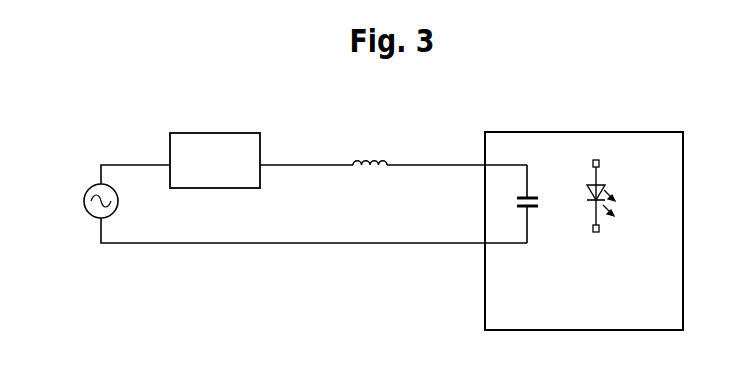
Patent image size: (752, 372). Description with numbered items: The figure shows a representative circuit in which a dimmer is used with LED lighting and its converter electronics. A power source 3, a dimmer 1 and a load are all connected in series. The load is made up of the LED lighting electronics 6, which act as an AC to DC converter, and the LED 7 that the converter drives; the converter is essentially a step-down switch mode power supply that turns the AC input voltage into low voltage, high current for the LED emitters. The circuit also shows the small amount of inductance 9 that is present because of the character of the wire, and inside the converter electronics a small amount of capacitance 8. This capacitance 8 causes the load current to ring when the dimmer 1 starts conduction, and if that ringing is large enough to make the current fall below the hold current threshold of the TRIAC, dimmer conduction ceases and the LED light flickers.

The dimmer 1 is at (192, 133).
The power source 3 is at (87, 211).
The LED lighting electronics 6 is at (680, 123).
The LED 7 is at (602, 180).
The capacitance 8 is at (539, 189).
The inductance 9 is at (366, 160).